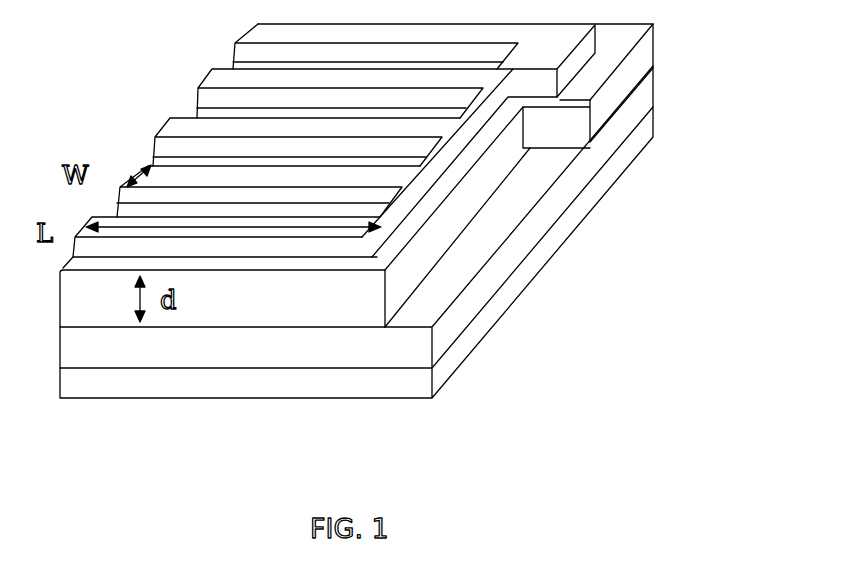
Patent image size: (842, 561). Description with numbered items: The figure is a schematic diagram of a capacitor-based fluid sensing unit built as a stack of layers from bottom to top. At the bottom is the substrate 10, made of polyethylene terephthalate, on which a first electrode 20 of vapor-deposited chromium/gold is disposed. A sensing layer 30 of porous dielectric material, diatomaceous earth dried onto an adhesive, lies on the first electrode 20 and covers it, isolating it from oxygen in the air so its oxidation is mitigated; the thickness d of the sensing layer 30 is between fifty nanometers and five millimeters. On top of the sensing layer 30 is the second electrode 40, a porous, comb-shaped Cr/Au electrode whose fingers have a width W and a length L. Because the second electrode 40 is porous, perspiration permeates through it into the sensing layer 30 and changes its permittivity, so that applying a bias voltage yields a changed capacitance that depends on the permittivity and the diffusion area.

The substrate 10 is at (488, 310).
The first electrode 20 is at (528, 230).
The sensing layer 30 is at (485, 175).
The second electrode 40 is at (485, 107).